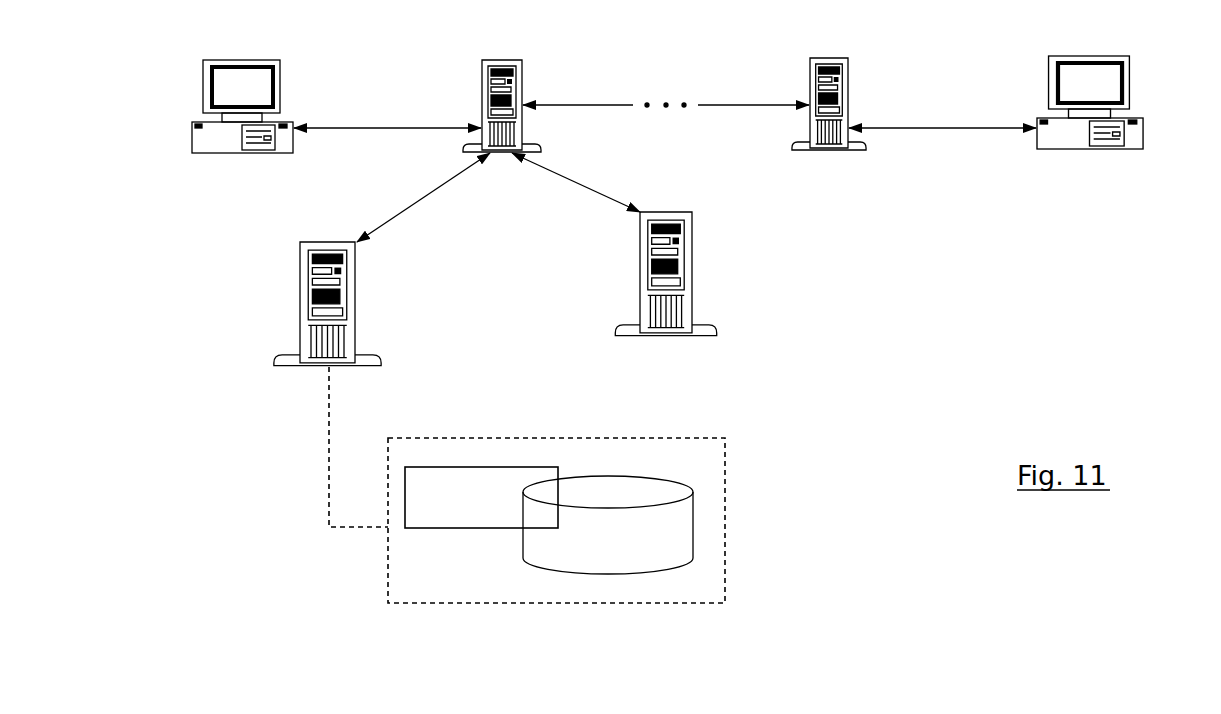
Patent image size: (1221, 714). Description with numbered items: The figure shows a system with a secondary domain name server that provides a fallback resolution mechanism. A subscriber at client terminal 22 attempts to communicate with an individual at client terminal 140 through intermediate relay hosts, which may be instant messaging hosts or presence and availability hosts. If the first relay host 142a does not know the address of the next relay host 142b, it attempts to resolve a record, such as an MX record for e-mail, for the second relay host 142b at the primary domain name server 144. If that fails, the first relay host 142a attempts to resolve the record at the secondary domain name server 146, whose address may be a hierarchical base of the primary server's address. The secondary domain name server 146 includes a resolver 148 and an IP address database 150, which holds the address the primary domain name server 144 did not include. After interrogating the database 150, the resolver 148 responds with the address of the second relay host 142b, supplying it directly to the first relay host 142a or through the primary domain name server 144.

The client terminal 22 is at (217, 152).
The first relay host 142a is at (508, 60).
The second relay host 142b is at (832, 57).
The client terminal 140 is at (1092, 152).
The secondary domain name server 146 is at (356, 327).
The primary domain name server 144 is at (692, 295).
The resolver 148 is at (432, 528).
The IP address database 150 is at (608, 493).